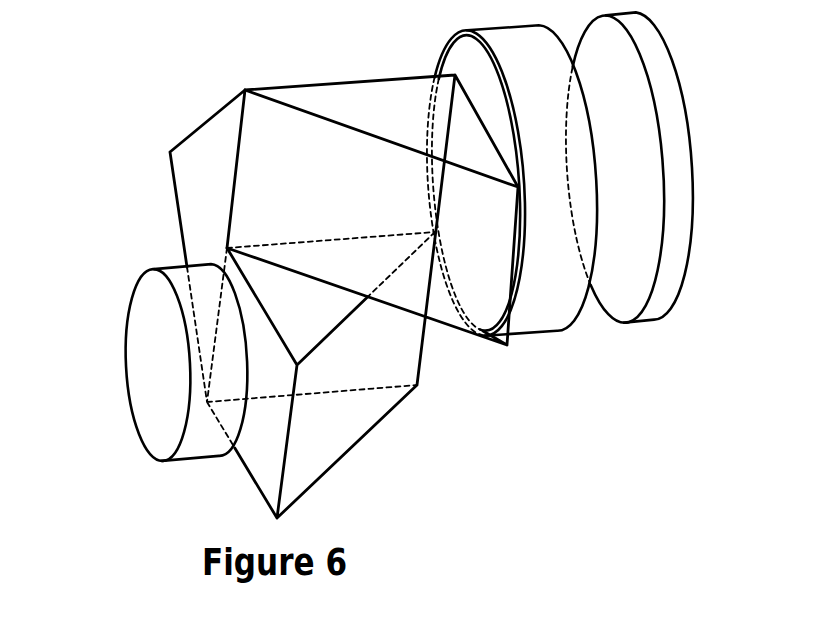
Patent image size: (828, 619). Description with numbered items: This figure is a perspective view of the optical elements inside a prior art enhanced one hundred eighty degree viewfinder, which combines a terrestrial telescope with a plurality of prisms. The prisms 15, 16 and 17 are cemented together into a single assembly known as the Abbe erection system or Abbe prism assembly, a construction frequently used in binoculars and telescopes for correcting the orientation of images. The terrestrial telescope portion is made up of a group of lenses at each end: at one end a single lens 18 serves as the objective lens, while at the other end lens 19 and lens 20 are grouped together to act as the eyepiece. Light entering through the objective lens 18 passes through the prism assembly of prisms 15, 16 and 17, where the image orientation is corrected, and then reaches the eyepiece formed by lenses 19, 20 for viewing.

The prism 15 is at (377, 440).
The prism 16 is at (443, 270).
The prism 17 is at (203, 165).
The objective lens 18 is at (157, 367).
The lens 19 is at (552, 350).
The lens 20 is at (660, 330).